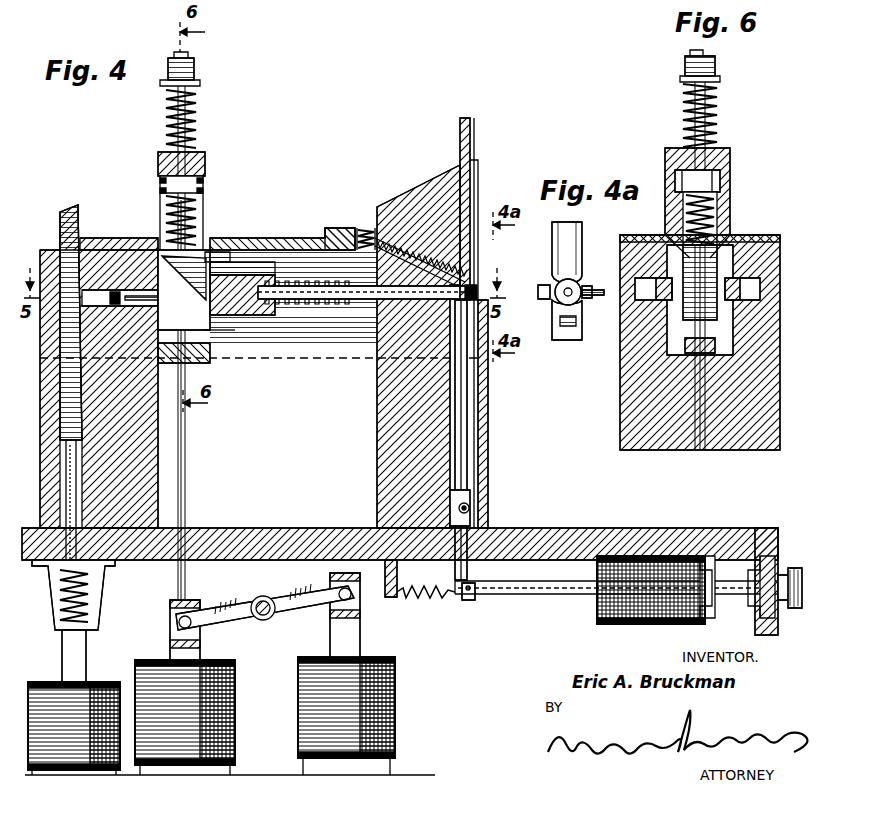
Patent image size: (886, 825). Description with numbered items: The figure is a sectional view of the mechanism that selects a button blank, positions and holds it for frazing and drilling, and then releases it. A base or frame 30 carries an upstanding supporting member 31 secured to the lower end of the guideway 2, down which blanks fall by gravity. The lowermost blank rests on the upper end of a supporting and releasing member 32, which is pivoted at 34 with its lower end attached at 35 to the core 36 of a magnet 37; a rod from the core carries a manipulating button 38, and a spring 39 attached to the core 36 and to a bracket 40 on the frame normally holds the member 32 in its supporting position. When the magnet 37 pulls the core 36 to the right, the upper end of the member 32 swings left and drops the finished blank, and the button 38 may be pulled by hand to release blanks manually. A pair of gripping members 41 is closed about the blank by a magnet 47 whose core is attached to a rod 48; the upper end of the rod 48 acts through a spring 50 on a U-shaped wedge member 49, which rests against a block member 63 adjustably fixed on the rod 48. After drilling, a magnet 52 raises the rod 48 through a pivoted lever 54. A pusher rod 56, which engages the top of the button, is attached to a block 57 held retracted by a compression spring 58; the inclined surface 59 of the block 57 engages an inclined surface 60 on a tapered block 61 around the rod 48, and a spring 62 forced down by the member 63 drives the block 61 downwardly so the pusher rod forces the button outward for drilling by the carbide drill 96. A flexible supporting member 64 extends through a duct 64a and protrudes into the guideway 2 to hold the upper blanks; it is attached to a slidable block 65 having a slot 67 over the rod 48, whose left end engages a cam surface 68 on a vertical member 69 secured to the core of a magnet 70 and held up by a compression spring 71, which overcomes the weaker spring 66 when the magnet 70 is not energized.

In FIG. 4, the guideway 2 is at (474, 128).
In FIG. 4, the base or frame 30 is at (580, 528).
In FIG. 4, the upstanding supporting member 31 is at (380, 432).
In FIG. 4, the supporting and releasing member 32 is at (470, 385).
In FIG. 4a, the supporting and releasing member 32 is at (580, 324).
In FIG. 4, the pivot 34 is at (466, 504).
In FIG. 4, the attachment point 35 is at (476, 596).
In FIG. 4, the core 36 is at (553, 600).
In FIG. 4, the magnet 37 is at (625, 624).
In FIG. 4, the manipulating button 38 is at (800, 566).
In FIG. 4, the spring 39 is at (425, 600).
In FIG. 4, the bracket 40 is at (397, 570).
In FIG. 4a, the gripping members 41 is at (612, 322).
In FIG. 6, the gripping members 41 is at (740, 290).
In FIG. 4, the magnet or solenoid 47 is at (235, 682).
In FIG. 4, the rod 48 is at (188, 450).
In FIG. 6, the rod 48 is at (705, 392).
In FIG. 4, the U-shaped wedge member 49 is at (205, 158).
In FIG. 6, the U-shaped wedge member 49 is at (730, 156).
In FIG. 4, the spring 50 is at (200, 106).
In FIG. 6, the spring 50 is at (718, 118).
In FIG. 4, the magnet or solenoid 52 is at (395, 708).
In FIG. 4, the pivoted lever 54 is at (300, 595).
In FIG. 4, the pusher rod 56 is at (343, 285).
In FIG. 4, the block 57 is at (250, 320).
In FIG. 4, the compression spring 58 is at (262, 315).
In FIG. 4, the inclined surface 59 is at (260, 238).
In FIG. 4, the inclined surface 60 is at (235, 268).
In FIG. 4, the block 61 is at (200, 250).
In FIG. 6, the block 61 is at (732, 240).
In FIG. 4, the spring 62 is at (162, 212).
In FIG. 6, the spring 62 is at (716, 212).
In FIG. 4, the block member 63 is at (160, 186).
In FIG. 6, the block member 63 is at (720, 181).
In FIG. 4, the flexible supporting member 64 is at (370, 340).
In FIG. 4, the duct 64a is at (412, 235).
In FIG. 4, the slidable block member 65 is at (340, 228).
In FIG. 4, the spring 66 is at (366, 228).
In FIG. 4, the slot 67 is at (214, 255).
In FIG. 4, the cam surface 68 is at (82, 220).
In FIG. 4, the vertical member 69 is at (68, 384).
In FIG. 4, the magnet 70 is at (100, 680).
In FIG. 4, the compression spring 71 is at (88, 596).
In FIG. 4a, the carbide drill 96 is at (602, 290).